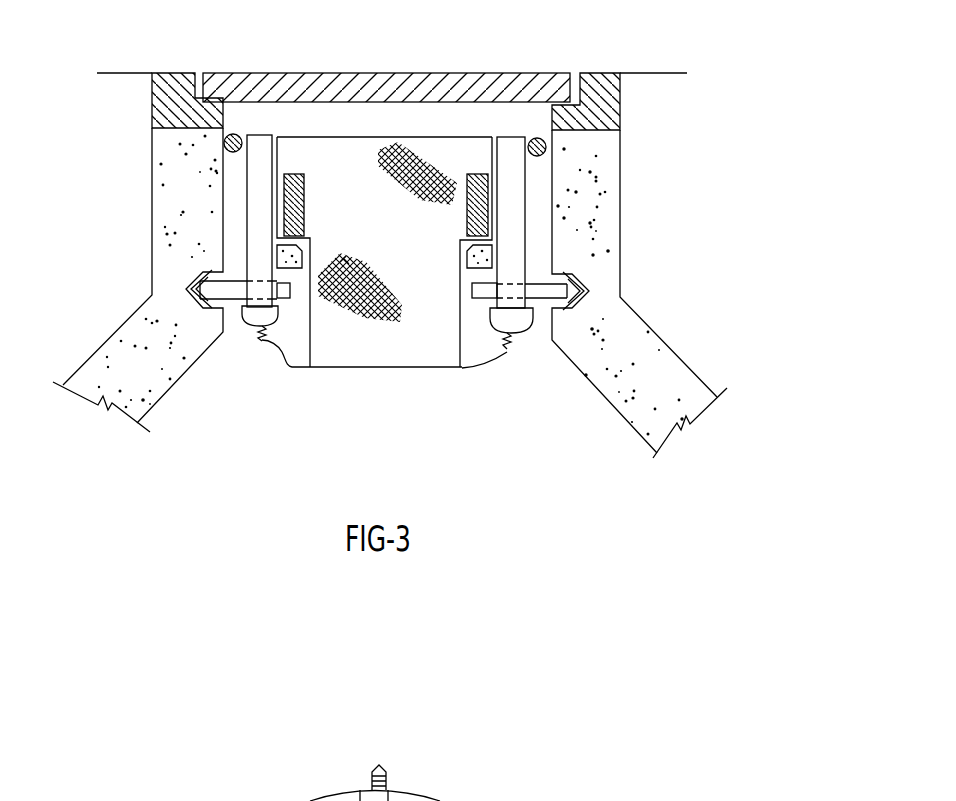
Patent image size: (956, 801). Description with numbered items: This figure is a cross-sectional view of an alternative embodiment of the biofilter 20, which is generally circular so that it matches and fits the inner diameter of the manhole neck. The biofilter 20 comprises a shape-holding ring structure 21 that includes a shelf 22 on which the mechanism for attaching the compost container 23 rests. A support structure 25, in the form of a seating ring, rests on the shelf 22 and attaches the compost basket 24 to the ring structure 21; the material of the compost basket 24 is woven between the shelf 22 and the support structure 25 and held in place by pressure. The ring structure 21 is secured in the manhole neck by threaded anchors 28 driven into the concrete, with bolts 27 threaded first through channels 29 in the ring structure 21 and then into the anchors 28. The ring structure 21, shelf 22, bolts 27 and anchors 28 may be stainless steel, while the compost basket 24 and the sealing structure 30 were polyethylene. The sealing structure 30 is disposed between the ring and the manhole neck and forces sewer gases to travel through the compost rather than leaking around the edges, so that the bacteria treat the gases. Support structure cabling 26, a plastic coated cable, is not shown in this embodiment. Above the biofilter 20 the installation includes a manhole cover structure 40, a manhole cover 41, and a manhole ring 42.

The biofilter 20 is at (748, 72).
The shape-holding ring structure 21 is at (513, 262).
The shelf 22 is at (280, 256).
The compost container 23 is at (462, 340).
The compost basket 24 is at (421, 352).
The support structure 25 is at (481, 213).
The support structure cabling 26 is at (290, 367).
The bolts 27 is at (190, 279).
The threaded anchors 28 is at (590, 297).
The channels 29 is at (257, 307).
The sealing structure 30 is at (546, 149).
The manhole cover structure 40 is at (440, 60).
The manhole cover 41 is at (521, 80).
The manhole ring 42 is at (180, 93).